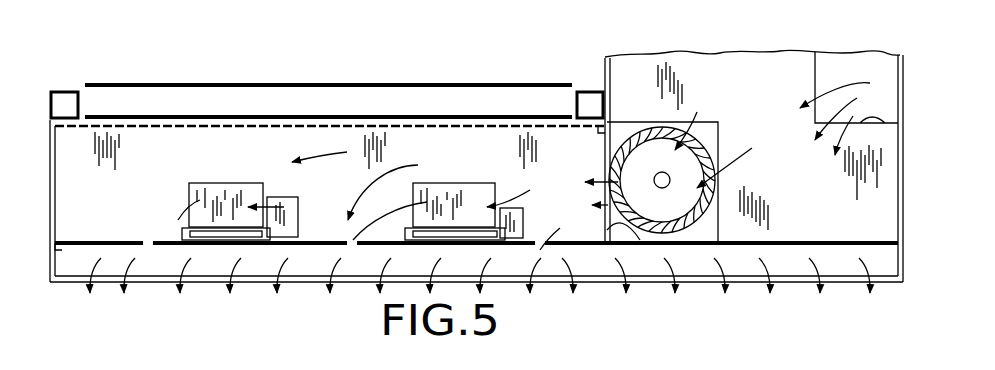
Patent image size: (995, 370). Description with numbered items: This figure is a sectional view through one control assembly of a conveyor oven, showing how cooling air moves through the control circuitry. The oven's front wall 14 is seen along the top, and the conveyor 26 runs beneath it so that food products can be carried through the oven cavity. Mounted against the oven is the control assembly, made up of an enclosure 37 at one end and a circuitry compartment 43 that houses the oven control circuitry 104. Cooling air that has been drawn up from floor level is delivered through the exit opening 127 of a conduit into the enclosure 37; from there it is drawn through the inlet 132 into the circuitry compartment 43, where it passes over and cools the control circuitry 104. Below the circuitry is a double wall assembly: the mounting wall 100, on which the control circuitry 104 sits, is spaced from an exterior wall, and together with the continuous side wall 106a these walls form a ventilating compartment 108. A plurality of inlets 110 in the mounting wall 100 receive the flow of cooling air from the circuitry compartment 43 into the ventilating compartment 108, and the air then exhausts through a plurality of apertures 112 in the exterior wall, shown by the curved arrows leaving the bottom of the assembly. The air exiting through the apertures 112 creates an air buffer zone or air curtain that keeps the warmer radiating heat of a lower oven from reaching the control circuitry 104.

The front wall 14 is at (218, 5).
The conveyor 26 is at (348, 85).
The circuitry compartment 43 is at (180, 130).
The enclosure 37 is at (784, 52).
The exit opening 127 is at (855, 62).
The continuous side wall 106a is at (655, 153).
The inlet 132 is at (600, 172).
The oven control circuitry 104 is at (237, 195).
The inlets 110 is at (148, 247).
The mounting wall 100 is at (100, 240).
The ventilating compartment 108 is at (97, 268).
The apertures 112 is at (128, 278).